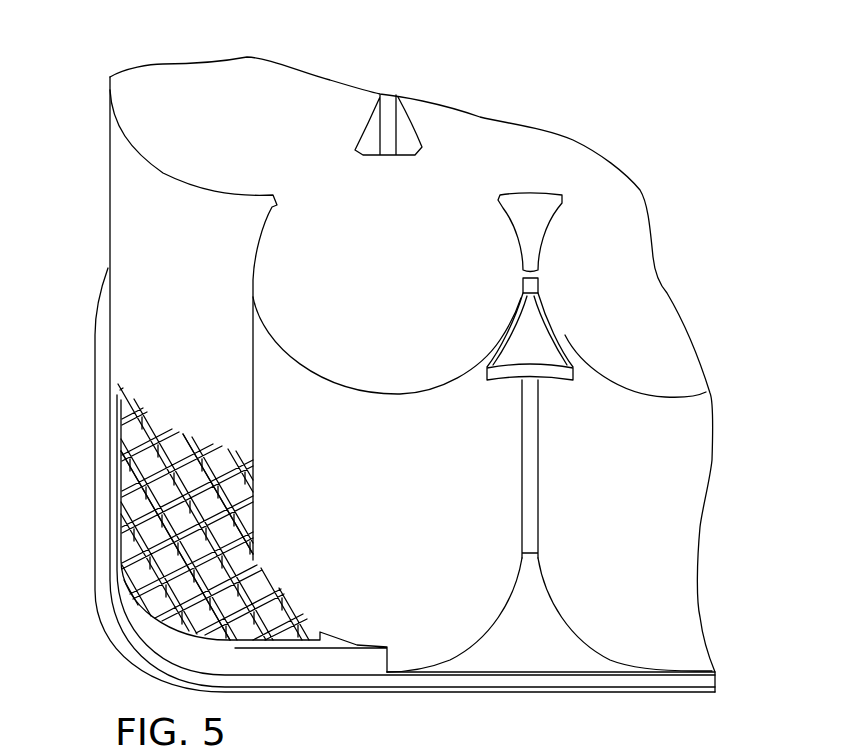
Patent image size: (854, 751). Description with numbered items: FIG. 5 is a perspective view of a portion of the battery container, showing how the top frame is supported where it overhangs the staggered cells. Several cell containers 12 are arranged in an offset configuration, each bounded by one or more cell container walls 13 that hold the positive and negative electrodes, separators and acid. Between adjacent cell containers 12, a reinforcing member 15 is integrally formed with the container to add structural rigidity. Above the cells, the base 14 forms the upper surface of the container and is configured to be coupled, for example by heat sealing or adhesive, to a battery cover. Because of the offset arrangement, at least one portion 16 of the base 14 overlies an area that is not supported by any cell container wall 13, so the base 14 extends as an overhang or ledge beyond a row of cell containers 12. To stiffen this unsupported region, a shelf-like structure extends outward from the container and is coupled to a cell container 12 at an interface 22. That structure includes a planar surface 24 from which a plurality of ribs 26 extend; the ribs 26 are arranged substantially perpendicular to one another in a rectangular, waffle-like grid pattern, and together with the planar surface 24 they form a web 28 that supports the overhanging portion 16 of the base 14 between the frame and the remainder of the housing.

The cell container 12 is at (294, 104).
The cell container wall 13 is at (135, 190).
The base 14 is at (571, 698).
The reinforcing member 15 is at (530, 343).
The portion of base 16 is at (96, 600).
The interface 22 is at (340, 640).
The planar surface 24 is at (148, 522).
The rib 26 is at (145, 481).
The web 28 is at (243, 606).